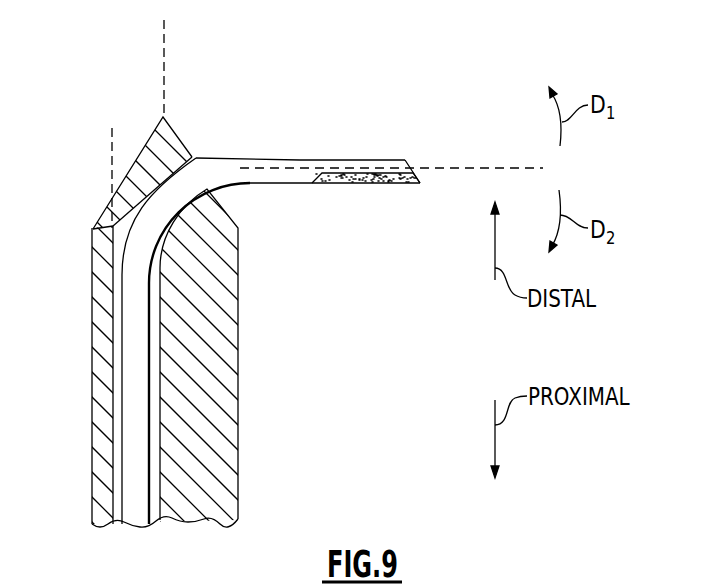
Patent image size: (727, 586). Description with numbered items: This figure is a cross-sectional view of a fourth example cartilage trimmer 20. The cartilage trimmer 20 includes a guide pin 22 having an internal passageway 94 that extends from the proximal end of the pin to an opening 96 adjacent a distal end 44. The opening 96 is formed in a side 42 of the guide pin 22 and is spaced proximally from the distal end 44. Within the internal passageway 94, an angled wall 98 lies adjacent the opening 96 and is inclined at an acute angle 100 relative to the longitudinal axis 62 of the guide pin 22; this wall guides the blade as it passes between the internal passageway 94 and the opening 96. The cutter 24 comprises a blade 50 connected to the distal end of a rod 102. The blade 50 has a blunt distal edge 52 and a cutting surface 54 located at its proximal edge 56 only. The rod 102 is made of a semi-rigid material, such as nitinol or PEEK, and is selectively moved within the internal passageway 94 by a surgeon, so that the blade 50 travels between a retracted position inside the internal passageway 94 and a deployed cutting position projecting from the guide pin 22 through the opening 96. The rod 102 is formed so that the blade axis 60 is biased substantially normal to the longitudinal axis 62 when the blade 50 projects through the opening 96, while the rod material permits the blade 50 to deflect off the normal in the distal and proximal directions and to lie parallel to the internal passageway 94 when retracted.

The cartilage trimmer 20 is at (352, 379).
The guide pin 22 is at (238, 449).
The cutter 24 is at (388, 136).
The side 42 is at (238, 388).
The distal end 44 is at (164, 117).
The blade 50 is at (358, 158).
The blunt distal edge 52 is at (375, 158).
The cutting surface 54 is at (357, 183).
The proximal edge 56 is at (387, 185).
The blade axis 60 is at (450, 168).
The longitudinal axis 62 is at (165, 60).
The internal passageway 94 is at (108, 460).
The opening 96 is at (205, 149).
The angled wall 98 is at (112, 190).
The acute angle 100 is at (106, 222).
The rod 102 is at (137, 389).